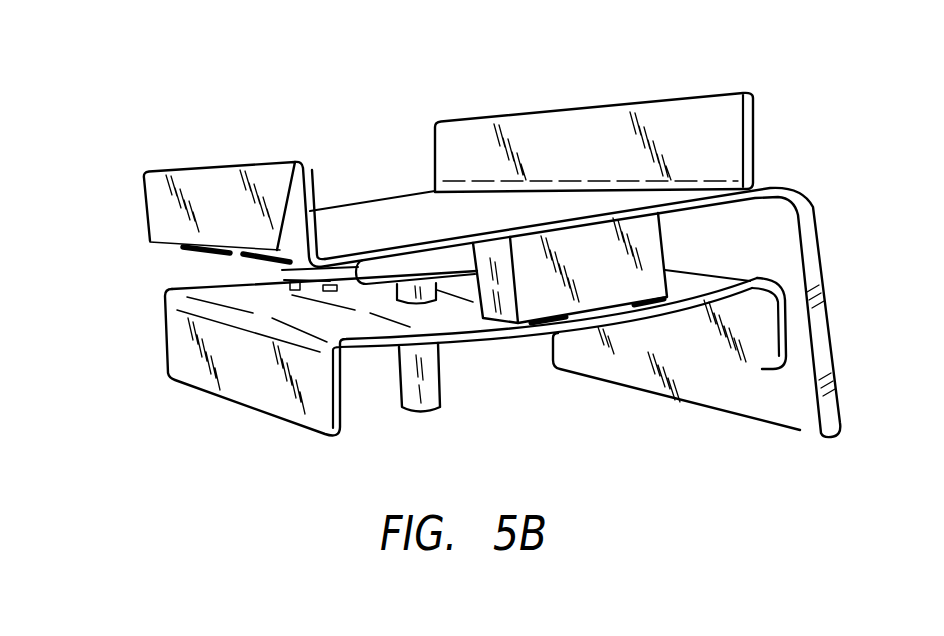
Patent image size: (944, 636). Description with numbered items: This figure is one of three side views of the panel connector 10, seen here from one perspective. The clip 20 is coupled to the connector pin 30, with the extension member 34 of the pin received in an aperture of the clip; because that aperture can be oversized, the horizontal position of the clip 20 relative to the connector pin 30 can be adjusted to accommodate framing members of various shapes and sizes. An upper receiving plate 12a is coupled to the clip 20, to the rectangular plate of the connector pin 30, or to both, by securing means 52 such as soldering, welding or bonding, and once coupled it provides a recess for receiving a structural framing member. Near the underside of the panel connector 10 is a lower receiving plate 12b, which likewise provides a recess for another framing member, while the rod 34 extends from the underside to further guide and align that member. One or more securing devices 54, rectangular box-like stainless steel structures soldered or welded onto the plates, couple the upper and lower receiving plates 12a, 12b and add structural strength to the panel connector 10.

The panel connector 10 is at (163, 126).
The upper receiving plate 12a is at (170, 203).
The lower receiving plate 12b is at (203, 376).
The clip 20 is at (797, 205).
The connector pin 30 is at (290, 260).
The extension member 34 is at (427, 383).
The securing means 52 is at (295, 160).
The securing devices 54 is at (612, 258).